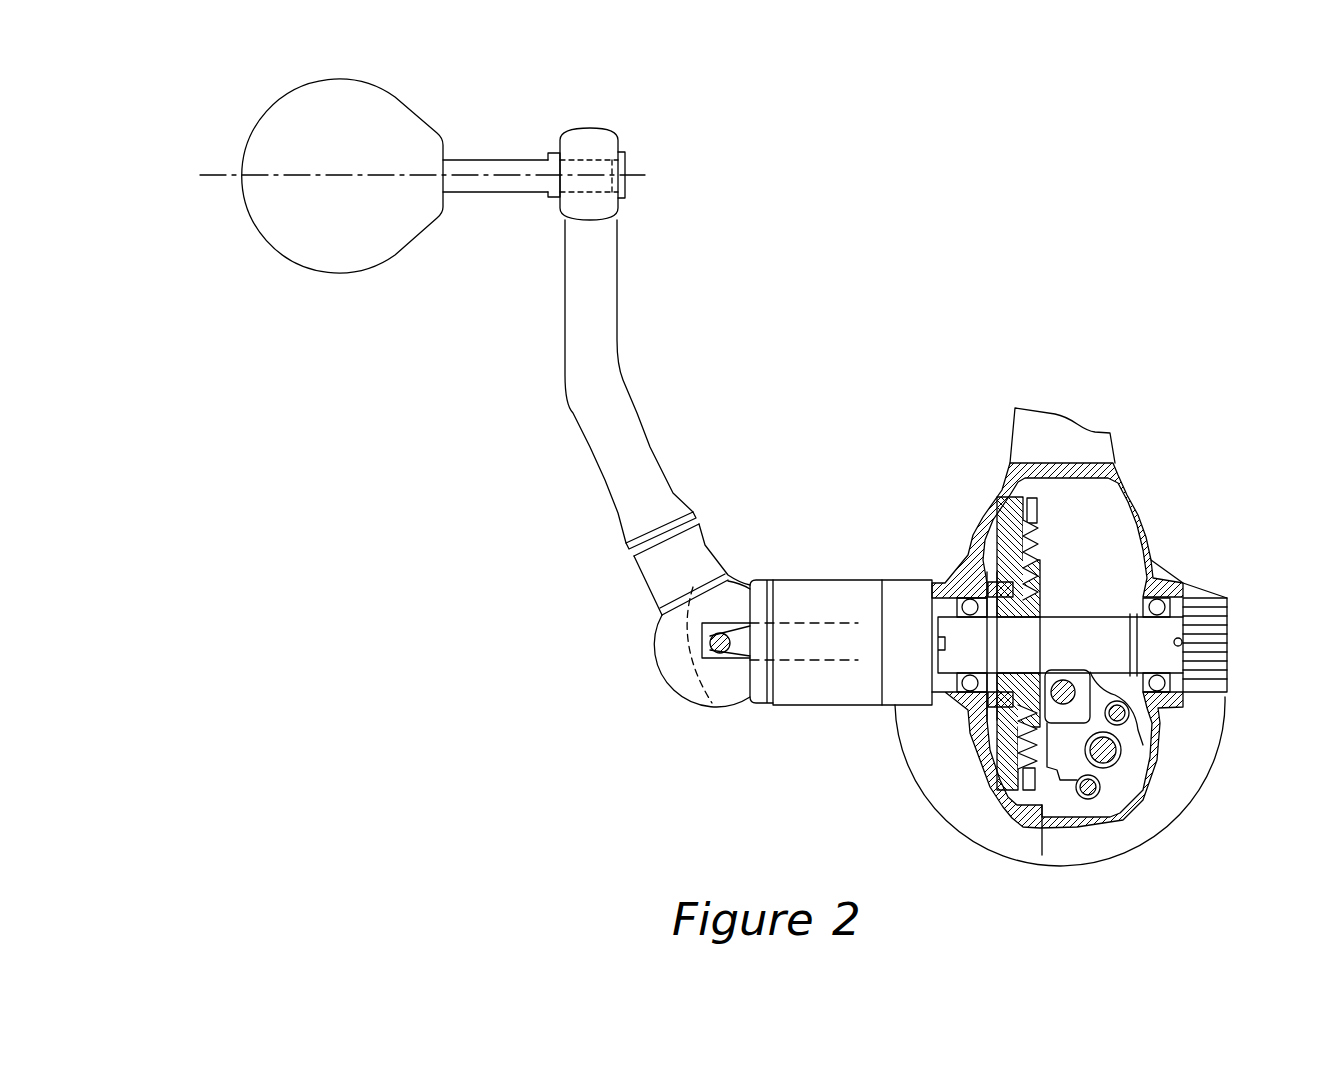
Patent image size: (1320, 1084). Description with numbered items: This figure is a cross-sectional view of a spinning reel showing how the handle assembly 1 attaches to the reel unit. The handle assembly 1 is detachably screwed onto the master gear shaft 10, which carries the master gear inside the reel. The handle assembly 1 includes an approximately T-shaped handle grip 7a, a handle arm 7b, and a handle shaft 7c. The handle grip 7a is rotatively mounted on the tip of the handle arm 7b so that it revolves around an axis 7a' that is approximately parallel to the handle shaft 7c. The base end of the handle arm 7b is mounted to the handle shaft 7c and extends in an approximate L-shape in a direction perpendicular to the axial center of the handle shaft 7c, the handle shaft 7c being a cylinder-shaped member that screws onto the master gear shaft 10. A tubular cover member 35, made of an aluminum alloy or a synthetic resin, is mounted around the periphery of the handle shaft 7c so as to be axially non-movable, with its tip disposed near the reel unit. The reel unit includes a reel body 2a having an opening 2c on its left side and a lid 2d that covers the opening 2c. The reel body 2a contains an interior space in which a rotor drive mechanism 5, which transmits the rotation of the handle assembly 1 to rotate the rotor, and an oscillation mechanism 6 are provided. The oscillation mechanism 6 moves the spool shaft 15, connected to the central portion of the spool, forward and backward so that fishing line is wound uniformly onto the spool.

The handle assembly 1 is at (620, 441).
The handle grip 7a is at (324, 201).
The axis 7a' is at (401, 235).
The handle arm 7b is at (610, 370).
The handle shaft 7c is at (800, 620).
The cover member 35 is at (850, 580).
The reel body 2a is at (1137, 508).
The opening 2c is at (1007, 462).
The lid 2d is at (978, 515).
The rotor drive mechanism 5 is at (1053, 544).
The master gear shaft 10 is at (1087, 630).
The spool shaft 15 is at (1057, 705).
The oscillation mechanism 6 is at (1122, 769).